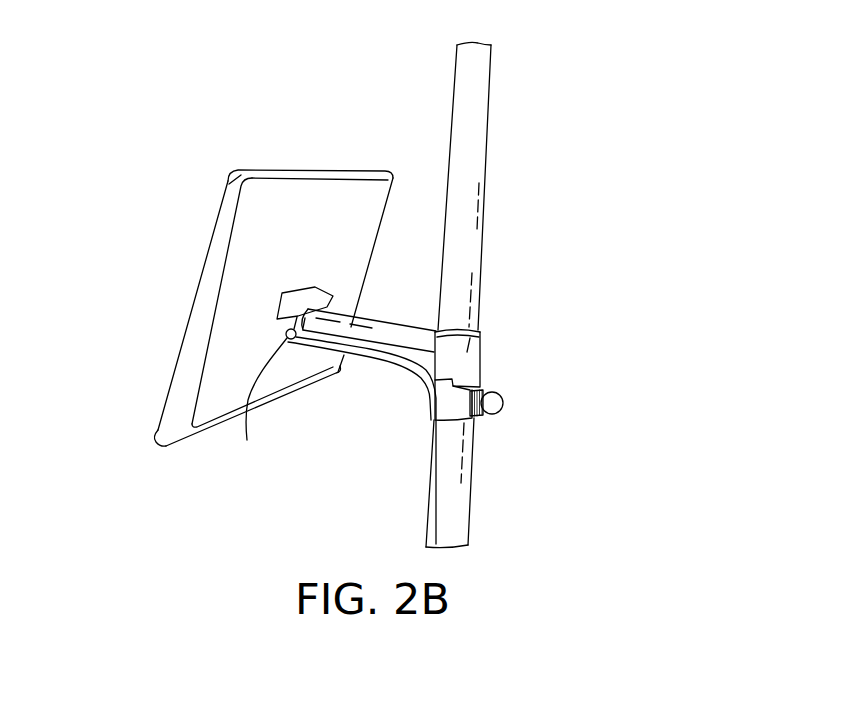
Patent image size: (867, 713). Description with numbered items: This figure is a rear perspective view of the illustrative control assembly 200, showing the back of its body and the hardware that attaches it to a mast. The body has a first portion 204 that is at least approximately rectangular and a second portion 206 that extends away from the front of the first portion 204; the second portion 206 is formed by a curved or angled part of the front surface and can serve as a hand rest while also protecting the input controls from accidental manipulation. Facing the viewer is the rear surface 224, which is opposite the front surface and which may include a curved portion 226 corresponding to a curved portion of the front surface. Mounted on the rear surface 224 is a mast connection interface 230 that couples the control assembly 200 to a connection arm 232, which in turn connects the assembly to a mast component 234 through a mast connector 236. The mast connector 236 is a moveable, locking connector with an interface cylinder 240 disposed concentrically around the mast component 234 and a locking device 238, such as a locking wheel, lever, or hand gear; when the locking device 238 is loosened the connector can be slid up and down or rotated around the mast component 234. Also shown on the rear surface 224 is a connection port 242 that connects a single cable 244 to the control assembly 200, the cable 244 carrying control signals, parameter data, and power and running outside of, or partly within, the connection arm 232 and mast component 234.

The control assembly 200 is at (130, 47).
The first portion 204 is at (192, 283).
The second portion 206 is at (153, 443).
The rear surface 224 is at (330, 183).
The curved portion 226 is at (203, 434).
The mast connection interface 230 is at (325, 297).
The connection arm 232 is at (392, 325).
The mast component 234 is at (478, 135).
The mast connector 236 is at (487, 355).
The locking device 238 is at (497, 404).
The interface cylinder 240 is at (481, 331).
The connection port 242 is at (263, 399).
The cable 244 is at (373, 357).